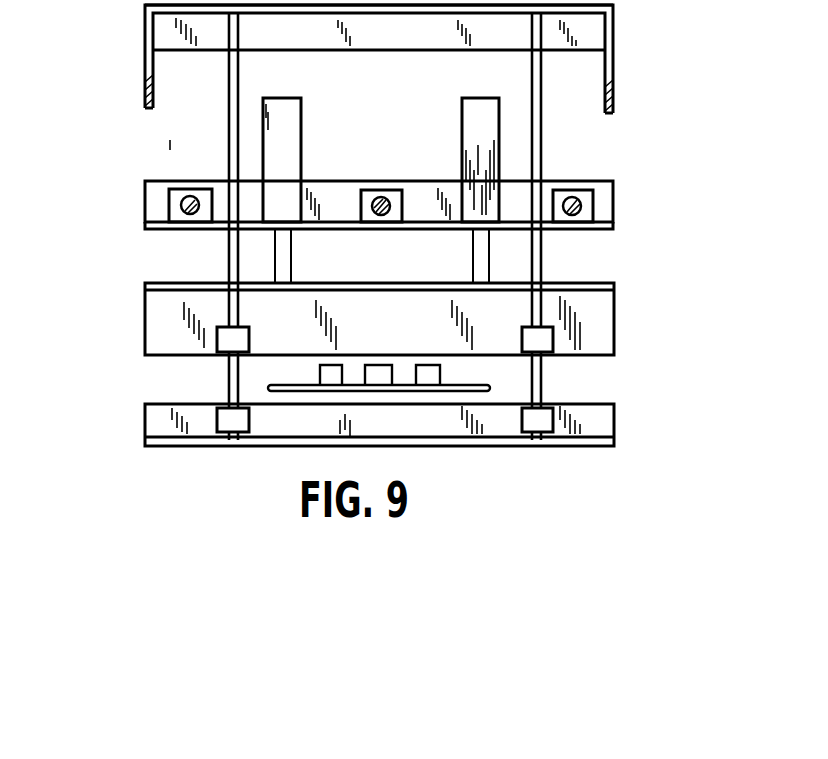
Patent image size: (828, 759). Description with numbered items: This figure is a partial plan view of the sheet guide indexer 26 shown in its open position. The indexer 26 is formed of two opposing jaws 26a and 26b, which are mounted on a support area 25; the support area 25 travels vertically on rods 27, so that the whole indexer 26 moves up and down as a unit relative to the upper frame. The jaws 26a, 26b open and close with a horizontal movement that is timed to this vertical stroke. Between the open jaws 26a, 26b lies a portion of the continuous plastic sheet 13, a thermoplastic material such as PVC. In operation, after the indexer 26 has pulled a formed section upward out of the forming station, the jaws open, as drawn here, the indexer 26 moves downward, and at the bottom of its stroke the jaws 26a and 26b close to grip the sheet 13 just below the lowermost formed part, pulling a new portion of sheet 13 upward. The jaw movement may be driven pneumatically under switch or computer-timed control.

The support area 25 is at (628, 90).
The rods 27 is at (230, 148).
The sheet guide indexer 26 is at (372, 365).
The jaw 26b is at (607, 321).
The jaw 26a is at (616, 425).
The plastic sheet 13 is at (490, 388).